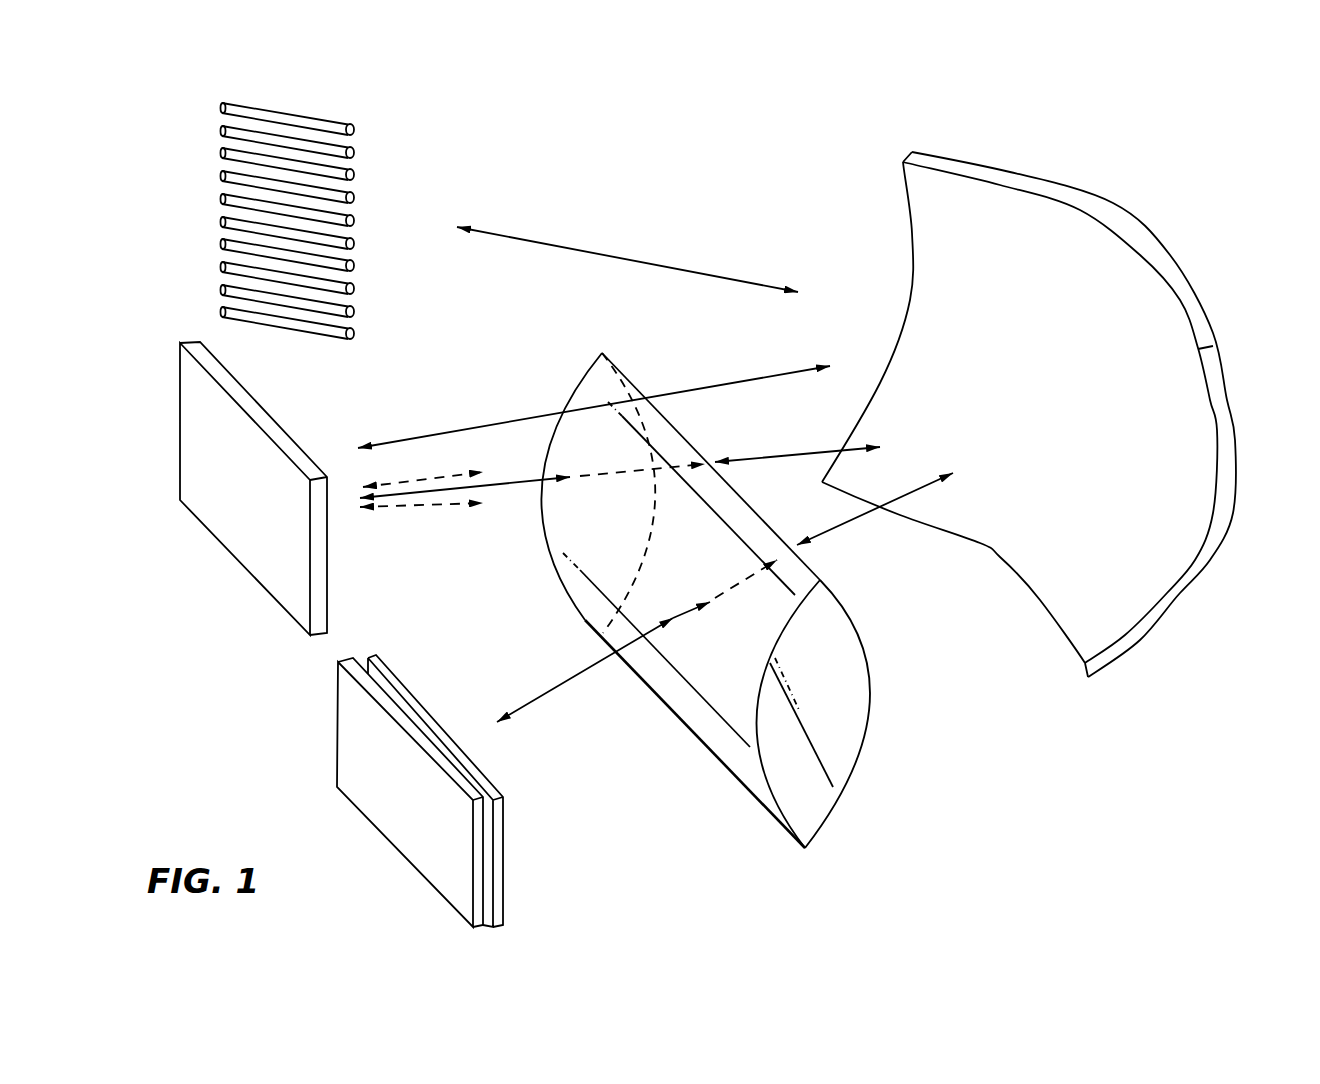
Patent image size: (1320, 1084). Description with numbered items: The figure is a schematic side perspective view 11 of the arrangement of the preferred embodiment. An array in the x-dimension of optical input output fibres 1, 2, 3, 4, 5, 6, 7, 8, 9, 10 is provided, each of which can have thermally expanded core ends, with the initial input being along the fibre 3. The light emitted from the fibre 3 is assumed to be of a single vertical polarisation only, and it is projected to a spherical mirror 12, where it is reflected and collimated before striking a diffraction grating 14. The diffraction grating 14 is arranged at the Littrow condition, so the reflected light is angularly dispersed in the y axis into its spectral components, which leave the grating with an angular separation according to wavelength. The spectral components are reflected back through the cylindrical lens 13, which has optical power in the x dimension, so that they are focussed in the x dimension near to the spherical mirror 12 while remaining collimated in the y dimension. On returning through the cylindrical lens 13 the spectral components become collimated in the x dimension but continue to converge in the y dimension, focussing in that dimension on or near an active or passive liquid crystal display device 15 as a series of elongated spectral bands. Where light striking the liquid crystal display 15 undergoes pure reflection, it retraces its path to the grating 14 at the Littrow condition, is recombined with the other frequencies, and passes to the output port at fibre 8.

The optical input output fibre 1 is at (221, 107).
The optical input output fibre 2 is at (221, 130).
The optical input output fibre 3 is at (221, 152).
The optical input output fibre 4 is at (221, 175).
The optical input output fibre 5 is at (221, 198).
The optical input output fibre 6 is at (221, 221).
The optical input output fibre 7 is at (221, 243).
The optical input output fibre 8 is at (221, 266).
The optical input output fibre 9 is at (221, 289).
The optical input output fibre 10 is at (221, 311).
The side perspective view 11 is at (1118, 148).
The spherical mirror 12 is at (1142, 643).
The cylindrical lens 13 is at (870, 697).
The diffraction grating 14 is at (328, 578).
The liquid crystal display 15 is at (505, 825).